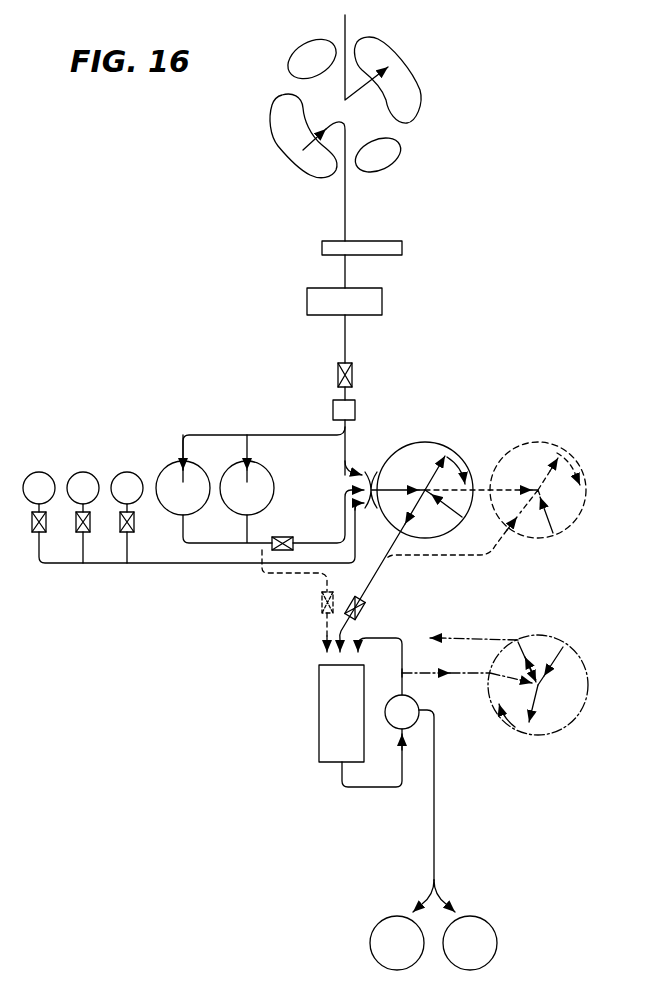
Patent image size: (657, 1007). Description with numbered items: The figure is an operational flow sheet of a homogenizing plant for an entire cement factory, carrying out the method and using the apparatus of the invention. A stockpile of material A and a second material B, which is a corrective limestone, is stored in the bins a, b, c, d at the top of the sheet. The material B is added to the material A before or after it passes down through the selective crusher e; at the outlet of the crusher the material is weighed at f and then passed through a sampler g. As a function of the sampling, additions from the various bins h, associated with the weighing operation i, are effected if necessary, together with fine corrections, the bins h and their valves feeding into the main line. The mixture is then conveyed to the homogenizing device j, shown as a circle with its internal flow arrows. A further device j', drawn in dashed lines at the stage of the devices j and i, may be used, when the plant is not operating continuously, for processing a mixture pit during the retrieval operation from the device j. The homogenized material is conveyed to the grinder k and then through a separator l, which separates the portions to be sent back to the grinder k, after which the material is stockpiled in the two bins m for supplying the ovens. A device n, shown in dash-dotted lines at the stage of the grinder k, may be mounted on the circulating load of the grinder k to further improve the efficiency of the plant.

The stockpile of material A is at (272, 113).
The corrective limestone material B is at (298, 52).
The bin a is at (303, 136).
The bin b is at (388, 80).
The bin c is at (312, 58).
The bin d is at (378, 154).
The selective crusher e is at (383, 301).
The weighing station f is at (353, 374).
The sampler g is at (356, 411).
The bins h is at (77, 476).
The weighing operation i is at (30, 527).
The homogenizing device j is at (406, 534).
The auxiliary device j' is at (486, 488).
The grinder k is at (323, 708).
The separator l is at (412, 709).
The bins m is at (382, 962).
The device on circulating load n is at (576, 711).